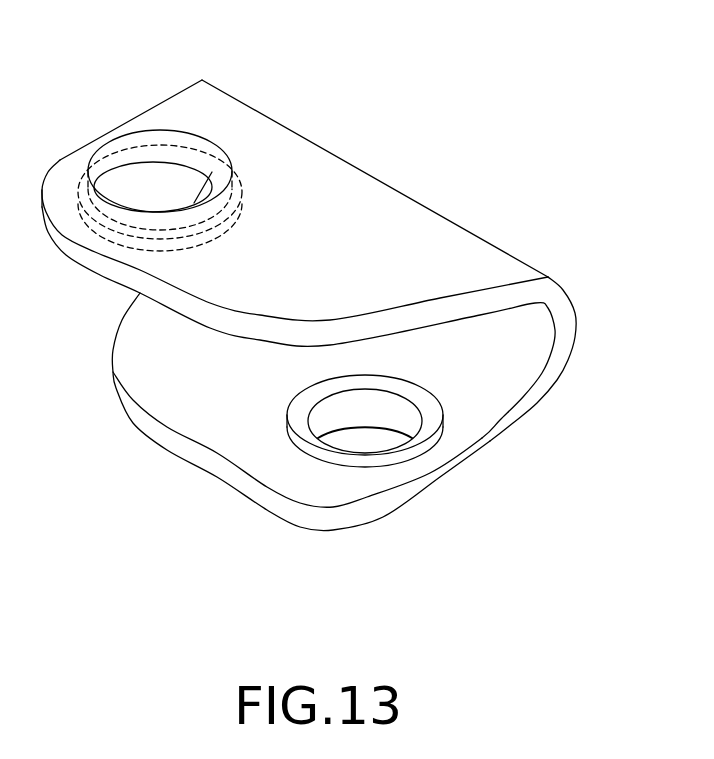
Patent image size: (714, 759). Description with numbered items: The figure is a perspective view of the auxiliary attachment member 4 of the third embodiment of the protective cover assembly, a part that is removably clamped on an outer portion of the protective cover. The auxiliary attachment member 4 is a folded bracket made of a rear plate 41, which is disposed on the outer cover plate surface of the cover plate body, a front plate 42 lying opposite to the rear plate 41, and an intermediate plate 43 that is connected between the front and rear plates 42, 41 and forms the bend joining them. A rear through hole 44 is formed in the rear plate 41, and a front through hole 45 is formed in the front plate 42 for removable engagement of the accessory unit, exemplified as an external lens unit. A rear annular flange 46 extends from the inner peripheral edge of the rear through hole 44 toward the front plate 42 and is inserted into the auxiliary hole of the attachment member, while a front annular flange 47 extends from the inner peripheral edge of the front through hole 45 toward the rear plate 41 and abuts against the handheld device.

The auxiliary attachment member 4 is at (277, 110).
The rear plate 41 is at (160, 368).
The front plate 42 is at (350, 188).
The intermediate plate 43 is at (522, 357).
The rear through hole 44 is at (373, 438).
The front through hole 45 is at (158, 130).
The rear annular flange 46 is at (313, 463).
The front annular flange 47 is at (112, 167).